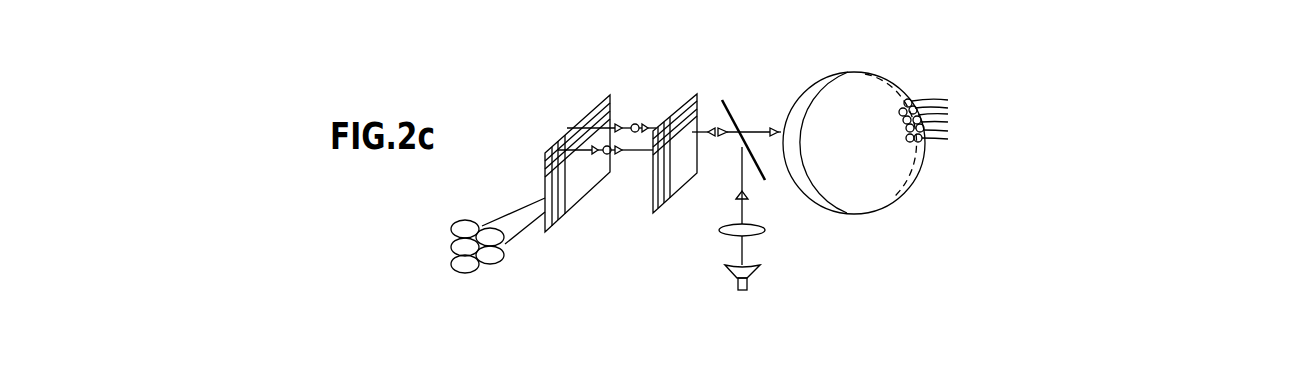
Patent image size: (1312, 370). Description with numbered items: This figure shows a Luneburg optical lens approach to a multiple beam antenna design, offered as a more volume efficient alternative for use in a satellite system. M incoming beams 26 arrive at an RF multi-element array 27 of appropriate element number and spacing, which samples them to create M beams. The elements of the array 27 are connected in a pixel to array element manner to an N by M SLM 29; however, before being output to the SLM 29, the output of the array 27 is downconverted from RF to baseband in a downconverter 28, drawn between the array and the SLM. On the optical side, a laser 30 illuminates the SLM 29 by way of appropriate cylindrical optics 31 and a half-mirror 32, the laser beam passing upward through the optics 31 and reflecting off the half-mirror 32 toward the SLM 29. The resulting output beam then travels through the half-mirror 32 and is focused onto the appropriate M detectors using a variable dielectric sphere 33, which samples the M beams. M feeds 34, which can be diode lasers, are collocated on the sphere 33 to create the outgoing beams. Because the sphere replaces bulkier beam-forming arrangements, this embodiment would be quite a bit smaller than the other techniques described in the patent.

The incoming beams 26 is at (440, 237).
The RF multi-element array 27 is at (583, 208).
The downconverter 28 is at (636, 120).
The SLM 29 is at (700, 103).
The laser 30 is at (758, 272).
The cylindrical optics 31 is at (766, 229).
The half-mirror 32 is at (738, 120).
The variable dielectric sphere 33 is at (898, 197).
The M feeds 34 is at (1075, 111).